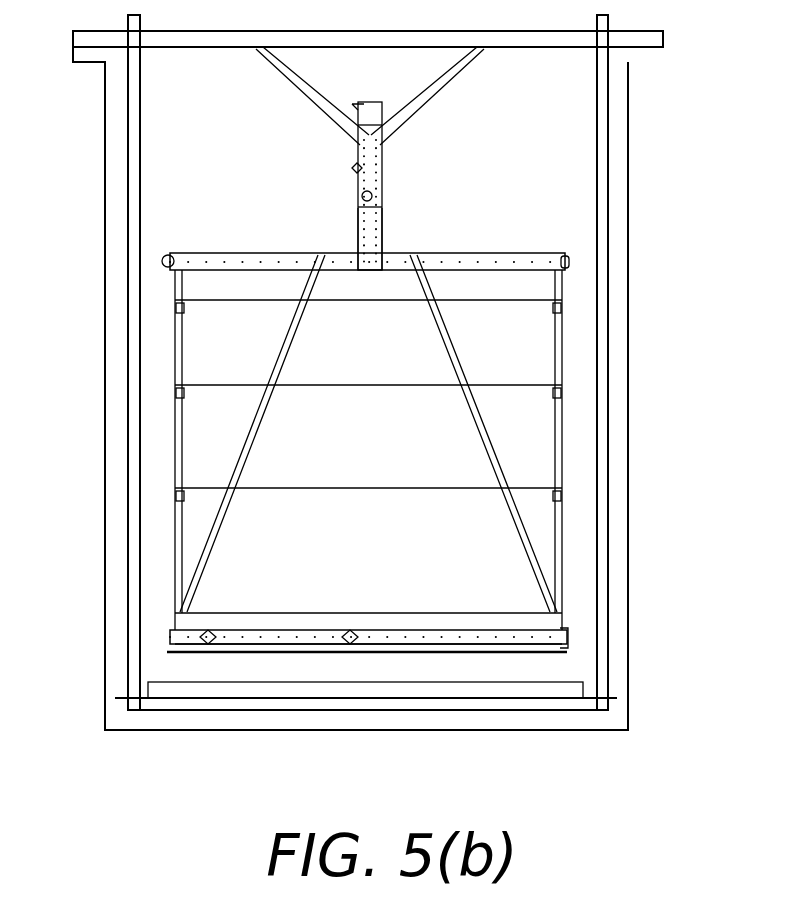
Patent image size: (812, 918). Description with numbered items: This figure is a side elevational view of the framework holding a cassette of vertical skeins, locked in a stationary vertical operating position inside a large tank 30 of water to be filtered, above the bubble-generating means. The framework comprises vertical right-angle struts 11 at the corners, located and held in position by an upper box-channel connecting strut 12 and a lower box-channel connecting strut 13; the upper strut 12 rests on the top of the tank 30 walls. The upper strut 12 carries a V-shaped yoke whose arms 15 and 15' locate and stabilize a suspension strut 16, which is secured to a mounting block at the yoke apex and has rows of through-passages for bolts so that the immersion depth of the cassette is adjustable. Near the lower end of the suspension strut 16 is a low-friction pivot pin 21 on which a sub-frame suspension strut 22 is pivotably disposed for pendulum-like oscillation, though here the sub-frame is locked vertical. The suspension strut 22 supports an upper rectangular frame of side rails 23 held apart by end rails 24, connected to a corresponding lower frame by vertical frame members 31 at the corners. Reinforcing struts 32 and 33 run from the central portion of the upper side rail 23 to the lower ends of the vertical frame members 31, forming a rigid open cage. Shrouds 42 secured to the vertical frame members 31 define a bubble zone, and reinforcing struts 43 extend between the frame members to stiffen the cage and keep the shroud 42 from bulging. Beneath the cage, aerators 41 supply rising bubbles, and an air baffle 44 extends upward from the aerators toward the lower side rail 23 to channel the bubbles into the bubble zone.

The vertical right-angle strut 11 is at (140, 164).
The upper box-channel connecting strut 12 is at (575, 48).
The lower box-channel connecting strut 13 is at (457, 705).
The arm of V-shaped yoke 15 is at (294, 96).
The arm of V-shaped yoke 15' is at (442, 96).
The suspension strut 16 is at (383, 173).
The low-friction pivot pin 21 is at (373, 196).
The suspension strut 22 is at (383, 222).
The side rail 23 is at (487, 250).
The end rail 24 is at (566, 636).
The tank 30 is at (630, 403).
The vertical frame member 31 is at (172, 288).
The reinforcing strut 32 is at (238, 466).
The reinforcing strut 33 is at (487, 453).
The aerator 41 is at (285, 705).
The shroud 42 is at (342, 572).
The reinforcing strut 43 is at (342, 487).
The air baffle 44 is at (245, 681).